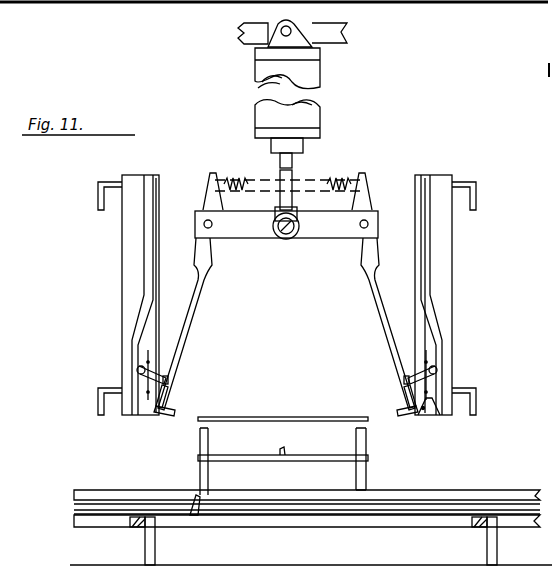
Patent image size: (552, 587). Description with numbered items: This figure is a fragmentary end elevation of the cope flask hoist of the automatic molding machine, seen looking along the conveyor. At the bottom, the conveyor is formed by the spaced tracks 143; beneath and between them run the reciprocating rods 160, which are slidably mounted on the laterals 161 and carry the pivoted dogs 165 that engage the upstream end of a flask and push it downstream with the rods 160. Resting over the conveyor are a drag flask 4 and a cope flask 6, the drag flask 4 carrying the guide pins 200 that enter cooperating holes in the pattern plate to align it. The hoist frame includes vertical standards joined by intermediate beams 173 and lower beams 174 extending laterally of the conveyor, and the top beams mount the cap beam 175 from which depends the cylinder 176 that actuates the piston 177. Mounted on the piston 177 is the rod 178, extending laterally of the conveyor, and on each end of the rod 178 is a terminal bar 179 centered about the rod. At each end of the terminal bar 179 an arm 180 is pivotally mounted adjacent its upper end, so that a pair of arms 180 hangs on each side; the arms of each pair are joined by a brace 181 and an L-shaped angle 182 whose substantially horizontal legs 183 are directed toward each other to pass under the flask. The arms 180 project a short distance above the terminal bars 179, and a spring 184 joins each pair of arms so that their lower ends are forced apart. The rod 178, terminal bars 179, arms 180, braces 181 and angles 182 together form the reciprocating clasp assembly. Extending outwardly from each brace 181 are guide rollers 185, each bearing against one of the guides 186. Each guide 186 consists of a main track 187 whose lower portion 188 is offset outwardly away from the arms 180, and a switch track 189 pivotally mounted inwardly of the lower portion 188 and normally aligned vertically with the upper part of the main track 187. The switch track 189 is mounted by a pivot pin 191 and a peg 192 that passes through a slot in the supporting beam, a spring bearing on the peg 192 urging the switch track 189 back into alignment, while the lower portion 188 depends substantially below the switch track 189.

The cap beam 175 is at (347, 38).
The cylinder 176 is at (257, 66).
The piston 177 is at (279, 161).
The spring 184 is at (340, 176).
The terminal bar 179 is at (246, 240).
The rod 178 is at (300, 235).
The arm 180 is at (196, 303).
The guide 186 is at (112, 283).
The main track 187 is at (152, 180).
The intermediate beam 173 is at (100, 196).
The lower beam 174 is at (100, 402).
The guide roller 185 is at (137, 368).
The peg 192 is at (150, 359).
The lower portion 188 is at (438, 360).
The brace 181 is at (170, 378).
The L-shaped angle 182 is at (172, 396).
The horizontal leg 183 is at (166, 409).
The switch track 189 is at (433, 415).
The pivot pin 191 is at (417, 415).
The cope flask 6 is at (266, 418).
The drag flask 4 is at (214, 477).
The guide pin 200 is at (286, 450).
The spaced track 143 is at (116, 491).
The pivoted dog 165 is at (194, 498).
The reciprocating rod 160 is at (364, 516).
The lateral 161 is at (130, 525).